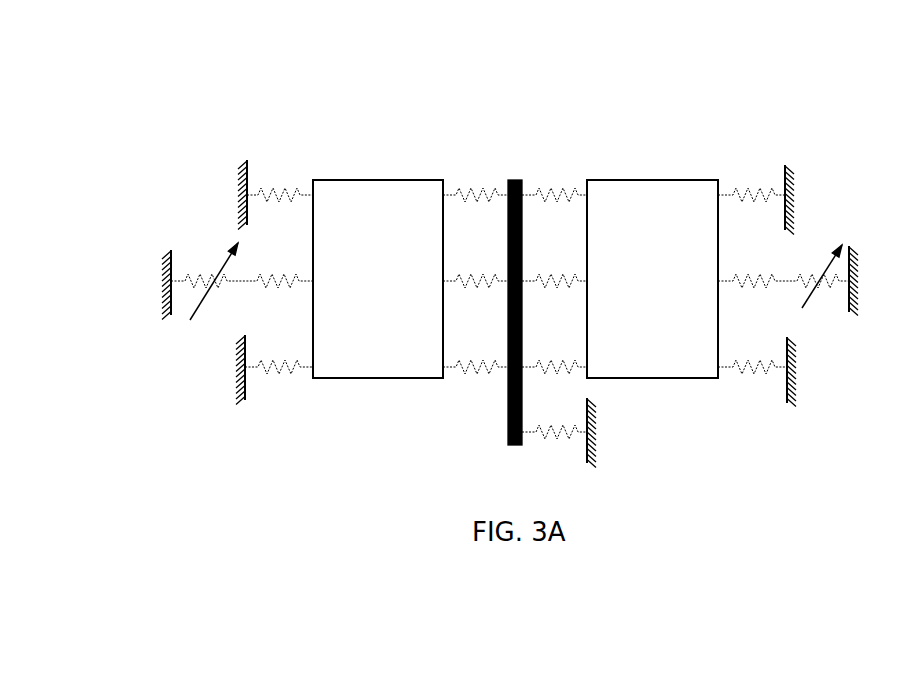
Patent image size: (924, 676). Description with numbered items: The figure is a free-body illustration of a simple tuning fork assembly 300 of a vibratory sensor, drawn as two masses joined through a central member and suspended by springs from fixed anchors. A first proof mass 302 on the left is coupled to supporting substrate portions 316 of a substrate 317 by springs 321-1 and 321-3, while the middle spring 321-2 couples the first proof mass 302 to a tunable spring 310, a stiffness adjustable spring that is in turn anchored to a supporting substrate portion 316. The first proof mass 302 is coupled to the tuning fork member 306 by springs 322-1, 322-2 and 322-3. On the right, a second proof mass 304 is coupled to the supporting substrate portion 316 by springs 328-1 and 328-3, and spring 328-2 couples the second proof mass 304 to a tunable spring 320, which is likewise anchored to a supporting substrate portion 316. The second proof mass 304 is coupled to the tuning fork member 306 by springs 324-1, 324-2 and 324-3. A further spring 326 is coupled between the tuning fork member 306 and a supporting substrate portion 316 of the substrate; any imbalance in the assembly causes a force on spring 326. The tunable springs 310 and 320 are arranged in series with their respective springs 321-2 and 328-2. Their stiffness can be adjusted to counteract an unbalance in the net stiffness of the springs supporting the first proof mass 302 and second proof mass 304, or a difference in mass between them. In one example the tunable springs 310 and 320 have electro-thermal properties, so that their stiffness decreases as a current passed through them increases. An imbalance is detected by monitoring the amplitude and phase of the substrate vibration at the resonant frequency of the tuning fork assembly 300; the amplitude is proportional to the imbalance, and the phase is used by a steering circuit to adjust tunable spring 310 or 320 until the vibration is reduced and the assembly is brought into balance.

The tuning fork assembly 300 is at (752, 127).
The first proof mass 302 is at (378, 210).
The second proof mass 304 is at (650, 205).
The tuning fork member 306 is at (508, 407).
The tunable spring 310 is at (193, 265).
The supporting substrate portion 316 is at (245, 177).
The substrate 317 is at (593, 426).
The tunable spring 320 is at (825, 290).
The spring 321-1 is at (291, 181).
The spring 321-2 is at (280, 290).
The spring 321-3 is at (278, 372).
The spring 322-1 is at (473, 180).
The spring 322-2 is at (467, 275).
The spring 322-3 is at (473, 378).
The spring 324-1 is at (554, 180).
The spring 324-2 is at (547, 272).
The spring 324-3 is at (555, 355).
The spring 326 is at (552, 440).
The spring 328-1 is at (753, 190).
The spring 328-2 is at (750, 285).
The spring 328-3 is at (758, 377).